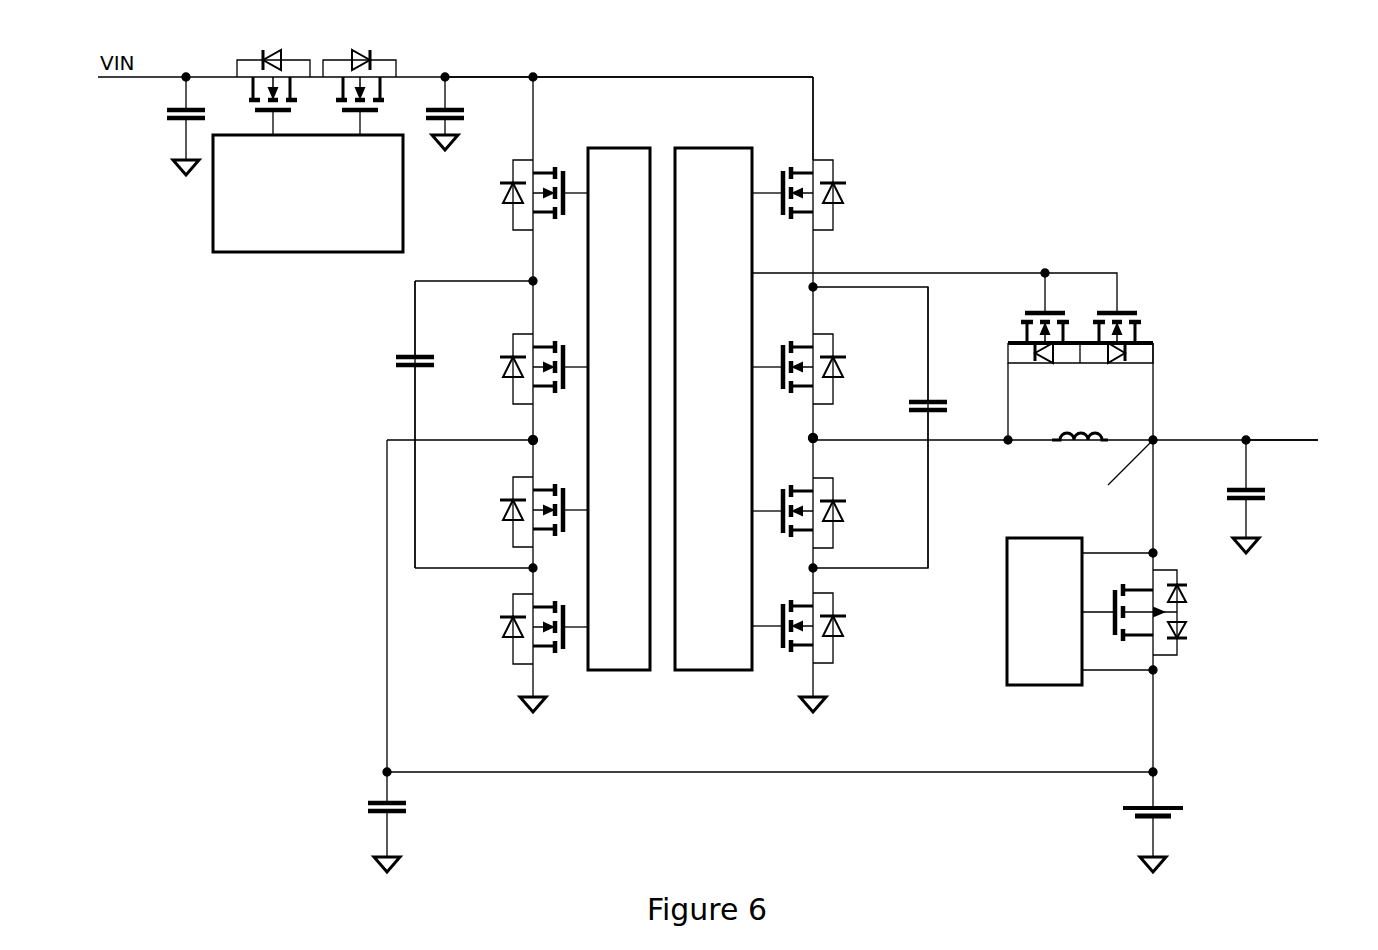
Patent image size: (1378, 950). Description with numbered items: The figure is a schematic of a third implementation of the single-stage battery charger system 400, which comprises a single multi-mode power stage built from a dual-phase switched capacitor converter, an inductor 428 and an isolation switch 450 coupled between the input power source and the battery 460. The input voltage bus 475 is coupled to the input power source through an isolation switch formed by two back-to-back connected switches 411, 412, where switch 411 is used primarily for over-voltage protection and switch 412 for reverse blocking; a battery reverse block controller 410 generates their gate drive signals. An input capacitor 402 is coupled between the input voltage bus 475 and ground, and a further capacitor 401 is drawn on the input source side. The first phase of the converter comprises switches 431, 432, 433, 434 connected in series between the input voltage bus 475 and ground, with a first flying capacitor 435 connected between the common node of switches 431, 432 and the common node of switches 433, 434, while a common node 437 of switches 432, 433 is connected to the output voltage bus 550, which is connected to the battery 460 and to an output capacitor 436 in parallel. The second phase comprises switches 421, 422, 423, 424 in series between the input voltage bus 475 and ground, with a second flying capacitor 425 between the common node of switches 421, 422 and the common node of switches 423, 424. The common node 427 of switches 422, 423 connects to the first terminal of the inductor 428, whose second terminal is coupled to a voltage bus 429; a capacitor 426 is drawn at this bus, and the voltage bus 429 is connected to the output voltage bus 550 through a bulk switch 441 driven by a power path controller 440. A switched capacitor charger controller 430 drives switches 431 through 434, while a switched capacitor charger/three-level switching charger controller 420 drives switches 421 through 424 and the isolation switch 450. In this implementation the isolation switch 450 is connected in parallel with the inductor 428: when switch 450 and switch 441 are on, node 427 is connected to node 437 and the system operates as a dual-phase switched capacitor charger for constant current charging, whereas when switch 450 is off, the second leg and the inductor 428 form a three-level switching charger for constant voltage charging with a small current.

The single-stage battery charger system 400 is at (830, 63).
The input capacitor 401 is at (153, 115).
The input capacitor 402 is at (460, 90).
The battery reverse block controller 410 is at (255, 258).
The switch 411 is at (243, 53).
The switch 412 is at (378, 50).
The switched capacitor charger/three-level switching charger controller 420 is at (715, 143).
The switch 421 is at (855, 196).
The switch 422 is at (843, 348).
The switch 423 is at (843, 533).
The switch 424 is at (847, 625).
The second flying capacitor 425 is at (937, 388).
The output capacitor 426 is at (1283, 527).
The common node (midpoint) 427 is at (823, 428).
The inductor 428 is at (1095, 443).
The voltage bus 429 is at (1318, 440).
The switched capacitor charger controller 430 is at (600, 143).
The switch 431 is at (500, 218).
The switch 432 is at (507, 352).
The switch 433 is at (503, 533).
The switch 434 is at (552, 658).
The first flying capacitor 435 is at (405, 340).
The output capacitor 436 is at (380, 820).
The common node 437 is at (527, 432).
The power path controller 440 is at (1005, 628).
The switch 441 is at (1197, 617).
The isolation switch 450 is at (1083, 367).
The battery 460 is at (1155, 820).
The input voltage bus 475 is at (613, 77).
The output voltage bus 550 is at (850, 772).